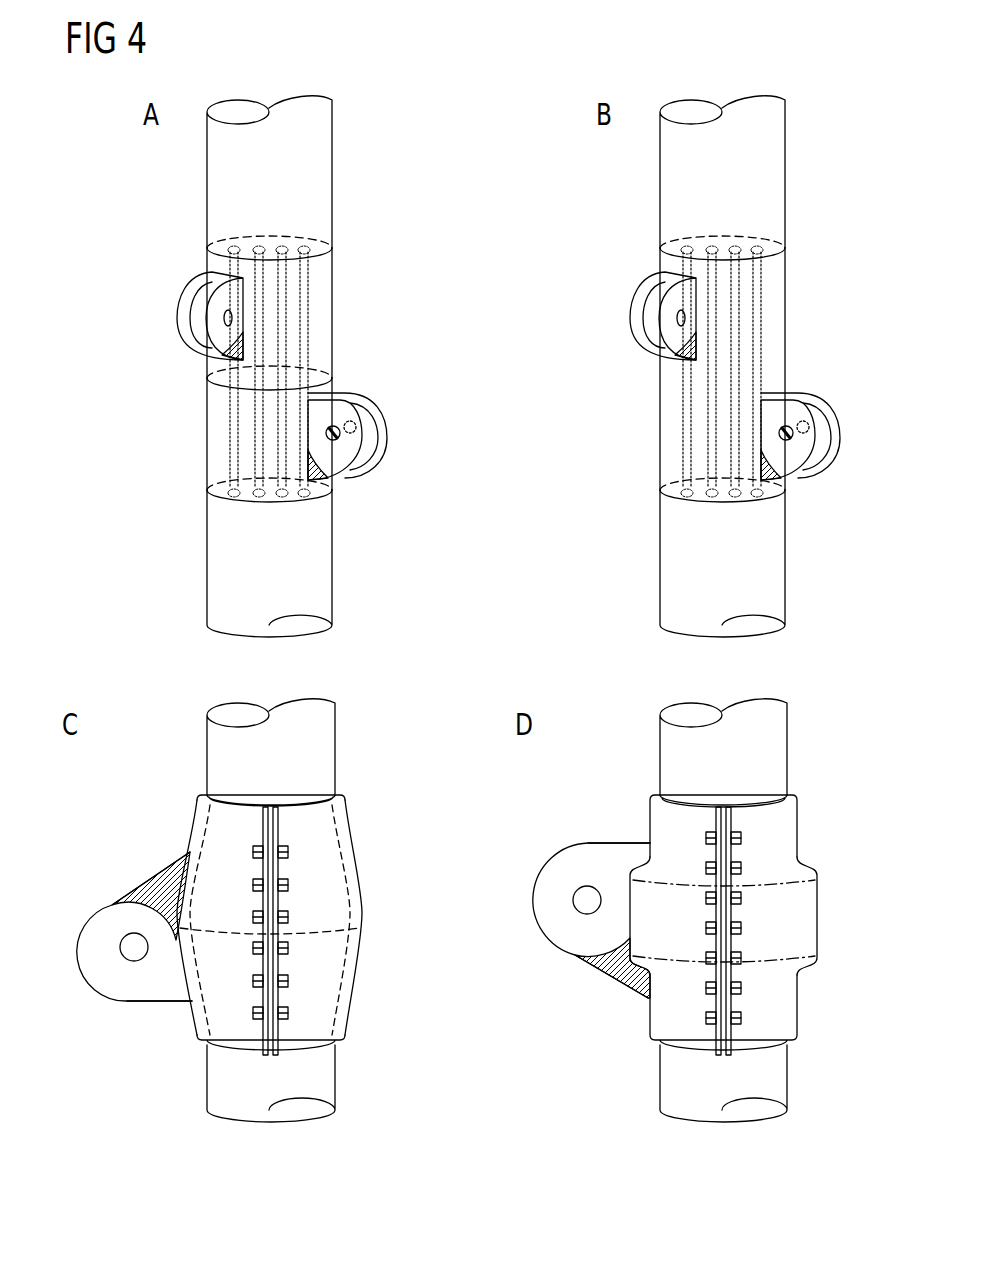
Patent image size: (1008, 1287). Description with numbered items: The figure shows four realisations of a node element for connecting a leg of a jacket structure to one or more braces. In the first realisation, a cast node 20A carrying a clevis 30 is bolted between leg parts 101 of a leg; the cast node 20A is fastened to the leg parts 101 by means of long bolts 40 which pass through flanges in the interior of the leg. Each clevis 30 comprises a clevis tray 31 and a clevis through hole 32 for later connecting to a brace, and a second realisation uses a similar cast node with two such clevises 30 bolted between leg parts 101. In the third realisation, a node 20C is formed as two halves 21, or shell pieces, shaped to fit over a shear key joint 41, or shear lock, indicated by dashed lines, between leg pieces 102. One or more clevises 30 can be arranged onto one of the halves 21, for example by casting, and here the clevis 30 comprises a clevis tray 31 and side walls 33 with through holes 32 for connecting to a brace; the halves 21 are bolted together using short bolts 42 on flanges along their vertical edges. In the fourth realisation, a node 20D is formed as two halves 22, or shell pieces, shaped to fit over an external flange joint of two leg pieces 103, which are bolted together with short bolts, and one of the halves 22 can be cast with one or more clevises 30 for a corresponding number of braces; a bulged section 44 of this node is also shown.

The leg parts 101 is at (322, 160).
The cast node 20A is at (330, 290).
The clevis 30 is at (212, 297).
The long bolts 40 is at (257, 436).
The clevis through hole 32 is at (336, 442).
The clevis tray 31 is at (322, 468).
The leg pieces 102 is at (322, 766).
The node 20C is at (345, 845).
The halves 21 is at (322, 922).
The shear key joint 41 is at (308, 935).
The short bolts 42 is at (256, 950).
The side walls 33 is at (130, 1003).
The leg pieces 103 is at (775, 766).
The halves 22 is at (783, 832).
The node 20D is at (812, 877).
The bulged housing section 44 is at (805, 918).